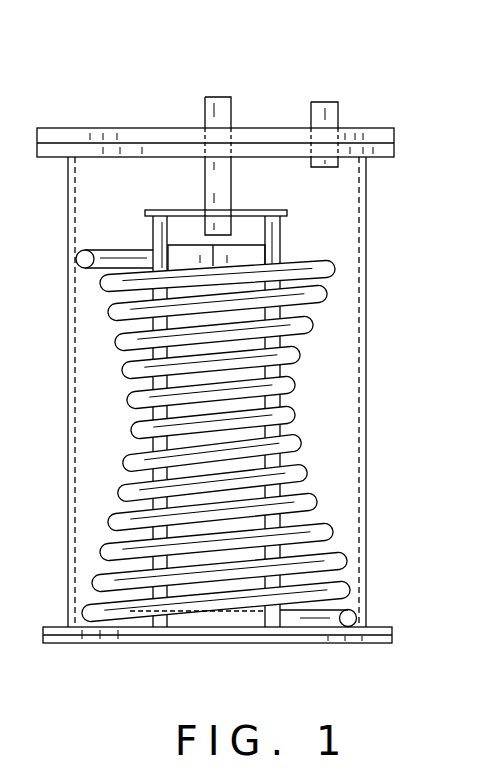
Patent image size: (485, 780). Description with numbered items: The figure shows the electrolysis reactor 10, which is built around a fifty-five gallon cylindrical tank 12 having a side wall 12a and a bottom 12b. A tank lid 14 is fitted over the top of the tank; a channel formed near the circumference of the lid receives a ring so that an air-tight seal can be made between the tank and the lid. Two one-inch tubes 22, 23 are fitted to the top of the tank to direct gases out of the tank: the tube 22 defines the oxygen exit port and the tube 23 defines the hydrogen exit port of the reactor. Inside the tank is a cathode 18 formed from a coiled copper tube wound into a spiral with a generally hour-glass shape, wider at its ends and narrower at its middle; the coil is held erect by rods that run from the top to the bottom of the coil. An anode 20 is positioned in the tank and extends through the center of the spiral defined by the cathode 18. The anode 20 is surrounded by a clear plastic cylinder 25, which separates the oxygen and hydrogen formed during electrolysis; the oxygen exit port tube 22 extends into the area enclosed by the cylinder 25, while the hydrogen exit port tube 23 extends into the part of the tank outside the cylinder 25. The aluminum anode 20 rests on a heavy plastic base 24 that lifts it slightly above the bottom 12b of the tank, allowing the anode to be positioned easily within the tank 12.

The electrolysis reactor 10 is at (236, 329).
The cylindrical tank 12 is at (249, 400).
The side wall 12a is at (366, 478).
The bottom 12b is at (392, 635).
The tank lid 14 is at (387, 128).
The cathode 18 is at (338, 260).
The anode 20 is at (268, 249).
The O2 exit port tube 22 is at (205, 113).
The H2 exit port tube 23 is at (338, 109).
The plastic base 24 is at (285, 620).
The cylinder 25 is at (152, 232).